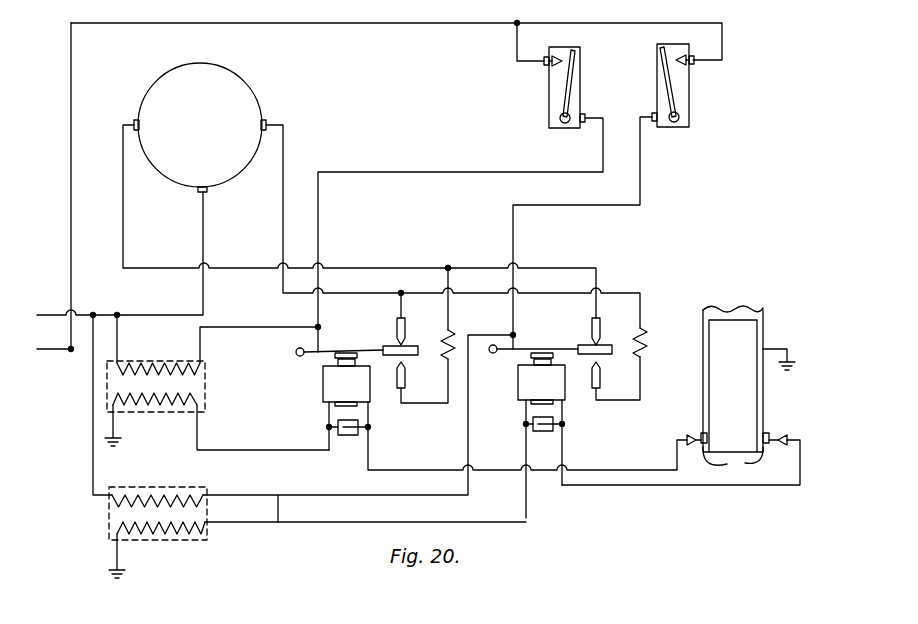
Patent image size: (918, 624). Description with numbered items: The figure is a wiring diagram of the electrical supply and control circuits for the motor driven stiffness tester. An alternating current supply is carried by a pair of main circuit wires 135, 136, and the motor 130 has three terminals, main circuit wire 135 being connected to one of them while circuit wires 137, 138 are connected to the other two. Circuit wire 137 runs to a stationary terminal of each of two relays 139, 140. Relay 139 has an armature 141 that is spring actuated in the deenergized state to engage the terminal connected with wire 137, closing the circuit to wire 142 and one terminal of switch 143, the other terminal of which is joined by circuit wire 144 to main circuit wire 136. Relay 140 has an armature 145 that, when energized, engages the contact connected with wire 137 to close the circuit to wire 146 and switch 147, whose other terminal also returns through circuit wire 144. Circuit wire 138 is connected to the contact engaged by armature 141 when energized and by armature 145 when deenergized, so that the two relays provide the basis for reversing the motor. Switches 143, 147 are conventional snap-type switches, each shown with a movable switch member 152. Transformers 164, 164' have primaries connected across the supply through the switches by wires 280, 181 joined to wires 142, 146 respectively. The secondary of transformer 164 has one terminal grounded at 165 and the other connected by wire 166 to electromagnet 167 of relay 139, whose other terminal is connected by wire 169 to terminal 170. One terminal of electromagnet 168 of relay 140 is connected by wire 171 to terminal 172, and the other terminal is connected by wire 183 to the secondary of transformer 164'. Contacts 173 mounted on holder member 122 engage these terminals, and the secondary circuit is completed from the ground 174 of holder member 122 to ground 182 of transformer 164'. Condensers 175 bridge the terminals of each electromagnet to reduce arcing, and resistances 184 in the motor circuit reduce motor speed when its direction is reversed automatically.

The holder member 122 is at (710, 375).
The motor 130 is at (253, 92).
The main circuit wire 135 is at (65, 314).
The main circuit wire 136 is at (57, 351).
The circuit wire 137 is at (283, 143).
The circuit wire 138 is at (123, 222).
The relay 139 is at (318, 389).
The relay 140 is at (514, 387).
The armature 141 is at (370, 350).
The wire 142 is at (396, 172).
The switch 143 is at (580, 78).
The circuit wire 144 is at (472, 25).
The armature 145 is at (563, 347).
The wire 146 is at (613, 205).
The switch 147 is at (689, 112).
The movable switch member 152 is at (570, 95).
The transformer 164 is at (180, 363).
The transformer 164' is at (150, 427).
The ground 165 is at (113, 428).
The wire 166 is at (248, 450).
The electromagnet 167 is at (333, 390).
The electromagnet 168 is at (558, 383).
The wire 169 is at (500, 473).
The terminal 170 is at (691, 434).
The wire 171 is at (705, 486).
The terminal 172 is at (779, 436).
The contacts 173 is at (716, 462).
The ground 174 is at (768, 348).
The condensers 175 is at (356, 421).
The wire 181 is at (283, 523).
The ground 182 is at (119, 570).
The wire 183 is at (331, 523).
The resistances 184 is at (448, 336).
The wire 280 is at (228, 327).